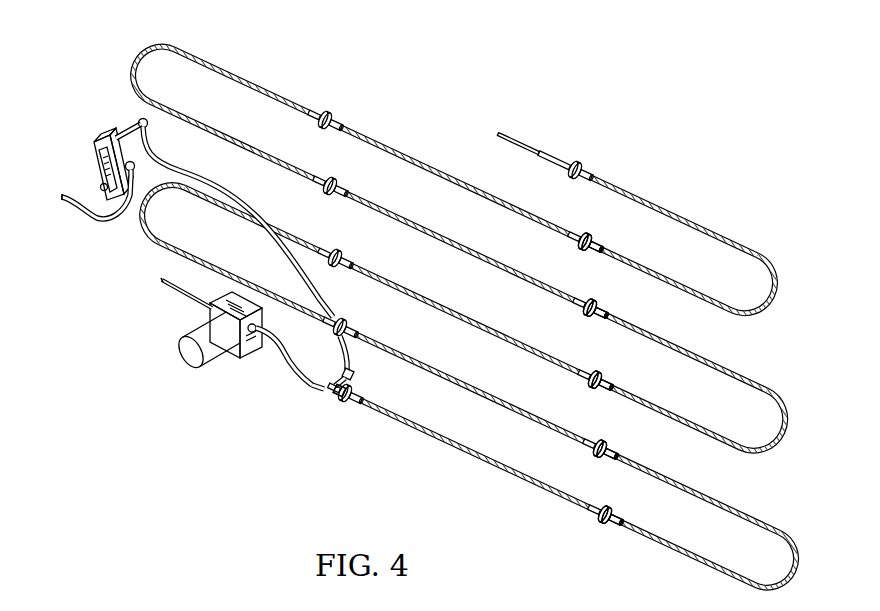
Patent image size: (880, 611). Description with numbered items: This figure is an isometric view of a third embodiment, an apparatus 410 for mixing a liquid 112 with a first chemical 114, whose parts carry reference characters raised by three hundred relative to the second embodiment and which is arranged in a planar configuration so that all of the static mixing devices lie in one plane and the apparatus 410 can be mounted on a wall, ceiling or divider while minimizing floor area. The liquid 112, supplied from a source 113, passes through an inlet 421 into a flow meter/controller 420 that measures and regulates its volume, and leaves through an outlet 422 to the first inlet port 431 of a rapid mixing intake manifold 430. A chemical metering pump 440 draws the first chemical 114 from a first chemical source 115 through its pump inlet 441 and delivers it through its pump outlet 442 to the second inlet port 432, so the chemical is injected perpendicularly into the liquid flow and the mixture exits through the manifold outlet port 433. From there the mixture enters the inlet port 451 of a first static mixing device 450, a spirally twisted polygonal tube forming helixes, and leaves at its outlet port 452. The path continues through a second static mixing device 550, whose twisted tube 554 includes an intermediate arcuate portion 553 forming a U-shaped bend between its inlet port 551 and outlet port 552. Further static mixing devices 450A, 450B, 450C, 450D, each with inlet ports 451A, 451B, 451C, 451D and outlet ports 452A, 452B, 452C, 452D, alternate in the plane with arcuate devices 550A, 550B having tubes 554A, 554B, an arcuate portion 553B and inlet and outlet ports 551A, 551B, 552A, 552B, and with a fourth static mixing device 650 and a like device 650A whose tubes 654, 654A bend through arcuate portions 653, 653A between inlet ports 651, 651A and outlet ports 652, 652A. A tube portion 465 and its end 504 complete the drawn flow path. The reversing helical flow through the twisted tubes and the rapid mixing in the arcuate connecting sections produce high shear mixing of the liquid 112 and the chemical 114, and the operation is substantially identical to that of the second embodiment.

The apparatus 410 is at (604, 90).
The liquid 112 is at (63, 192).
The inlet tube 113 is at (72, 200).
The first chemical 114 is at (151, 274).
The first chemical source 115 is at (162, 280).
The flow meter/controller 420 is at (93, 140).
The inlet 421 is at (120, 225).
The outlet 422 is at (137, 123).
The rapid mixing intake manifold 430 is at (328, 388).
The first inlet port 431 is at (333, 373).
The second inlet port 432 is at (312, 386).
The manifold outlet port 433 is at (335, 397).
The chemical metering pump 440 is at (238, 348).
The pump inlet 441 is at (183, 298).
The pump outlet 442 is at (277, 345).
The first static mixing device 450 is at (457, 450).
The third static mixing device 450A is at (447, 383).
The static mixing device 450B is at (438, 317).
The static mixing device 450C is at (430, 250).
The static mixing device 450D is at (430, 170).
The inlet port 451 is at (357, 398).
The inlet port 451A is at (583, 437).
The inlet port 451B is at (348, 257).
The inlet port 451C is at (584, 300).
The inlet port 451D is at (338, 117).
The outlet port 452 is at (590, 505).
The outlet port 452A is at (362, 330).
The outlet port 452B is at (585, 370).
The outlet port 452C is at (342, 187).
The outlet port 452D is at (570, 228).
The tube section 465 is at (558, 157).
The inlet rod 504 is at (517, 133).
The second static mixing device 550 is at (692, 557).
The arcuate connecting static mixing device 550A is at (675, 413).
The arcuate connecting static mixing device 550B is at (672, 283).
The inlet port 551 is at (617, 517).
The inlet port 551A is at (603, 380).
The inlet port 551B is at (593, 237).
The outlet port 552 is at (608, 445).
The outlet port 552A is at (600, 307).
The outlet port 552B is at (587, 167).
The intermediate arcuate portion 553 is at (782, 423).
The intermediate arcuate portion 553B is at (770, 292).
The tube 554 is at (705, 490).
The tube 554A is at (680, 353).
The tube 554B is at (678, 213).
The fourth static mixing device 650 is at (252, 280).
The static mixing device 650A is at (230, 133).
The inlet port 651 is at (333, 317).
The inlet port 651A is at (318, 177).
The outlet port 652 is at (323, 250).
The outlet port 652A is at (317, 103).
The intermediate arcuate portion 653 is at (150, 200).
The intermediate arcuate portion 653A is at (147, 75).
The tube 654 is at (213, 187).
The tube 654A is at (241, 68).